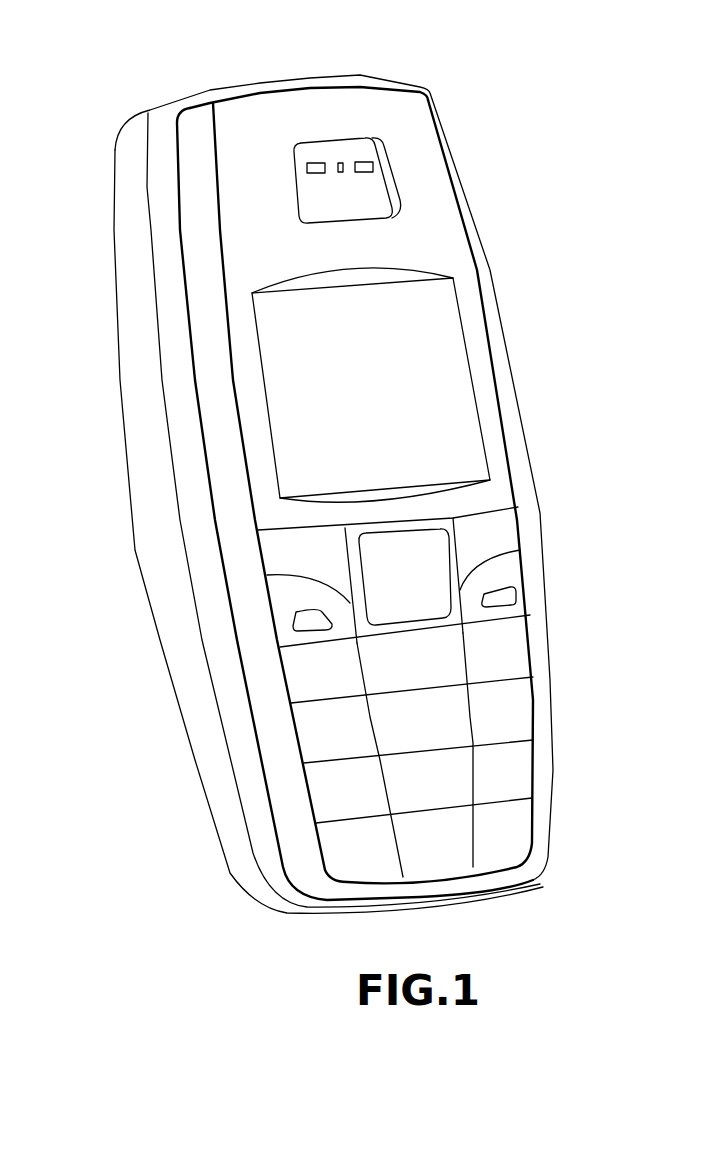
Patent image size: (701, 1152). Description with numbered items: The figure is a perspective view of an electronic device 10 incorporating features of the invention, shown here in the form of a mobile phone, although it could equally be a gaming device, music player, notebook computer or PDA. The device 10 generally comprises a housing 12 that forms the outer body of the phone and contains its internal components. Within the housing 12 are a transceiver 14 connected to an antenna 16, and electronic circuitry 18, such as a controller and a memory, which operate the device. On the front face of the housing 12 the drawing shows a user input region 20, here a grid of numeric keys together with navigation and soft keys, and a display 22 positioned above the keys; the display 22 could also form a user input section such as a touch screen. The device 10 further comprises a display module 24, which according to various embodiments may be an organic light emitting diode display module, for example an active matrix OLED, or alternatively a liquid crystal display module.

The electronic device 10 is at (121, 82).
The housing 12 is at (113, 185).
The transceiver 14 is at (410, 257).
The antenna 16 is at (420, 117).
The electronic circuitry 18 is at (495, 502).
The user input region 20 is at (570, 615).
The display 22 is at (452, 322).
The display module 24 is at (262, 413).